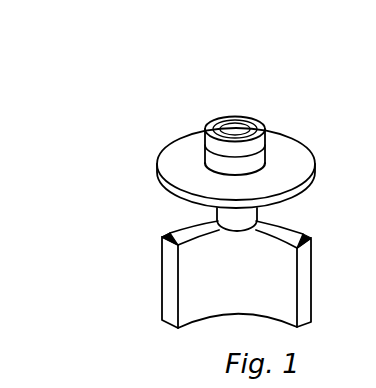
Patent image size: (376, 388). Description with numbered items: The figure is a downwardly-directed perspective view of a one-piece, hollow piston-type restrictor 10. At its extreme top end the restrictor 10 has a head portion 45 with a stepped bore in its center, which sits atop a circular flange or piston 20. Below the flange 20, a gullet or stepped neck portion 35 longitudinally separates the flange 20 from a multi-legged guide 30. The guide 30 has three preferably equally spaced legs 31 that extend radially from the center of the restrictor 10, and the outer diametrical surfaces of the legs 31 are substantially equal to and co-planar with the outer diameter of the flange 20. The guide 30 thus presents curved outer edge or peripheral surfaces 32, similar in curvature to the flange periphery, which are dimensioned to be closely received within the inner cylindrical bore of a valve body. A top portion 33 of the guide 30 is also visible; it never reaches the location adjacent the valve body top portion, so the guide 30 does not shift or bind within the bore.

The hollow piston-type restrictor 10 is at (146, 126).
The circular flange or piston 20 is at (290, 157).
The head portion 45 is at (258, 127).
The gullet or stepped neck portion 35 is at (267, 219).
The multi-legged guide 30 is at (220, 261).
The legs 31 is at (193, 228).
The curved outer edge or peripheral surfaces 32 is at (167, 302).
The top portion of guide 33 is at (172, 236).